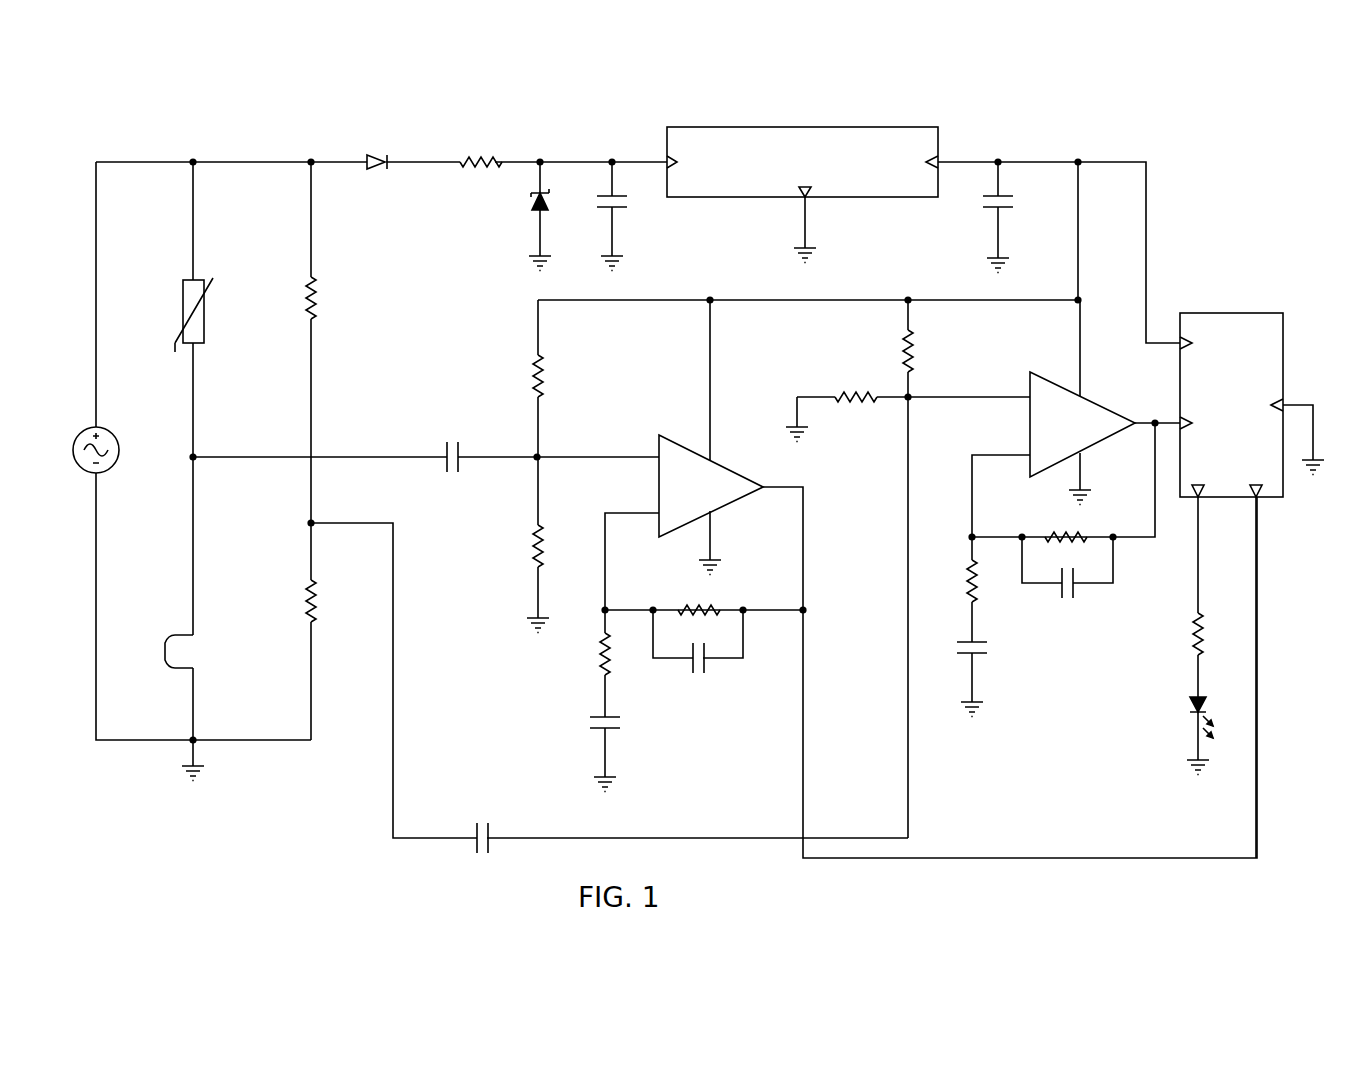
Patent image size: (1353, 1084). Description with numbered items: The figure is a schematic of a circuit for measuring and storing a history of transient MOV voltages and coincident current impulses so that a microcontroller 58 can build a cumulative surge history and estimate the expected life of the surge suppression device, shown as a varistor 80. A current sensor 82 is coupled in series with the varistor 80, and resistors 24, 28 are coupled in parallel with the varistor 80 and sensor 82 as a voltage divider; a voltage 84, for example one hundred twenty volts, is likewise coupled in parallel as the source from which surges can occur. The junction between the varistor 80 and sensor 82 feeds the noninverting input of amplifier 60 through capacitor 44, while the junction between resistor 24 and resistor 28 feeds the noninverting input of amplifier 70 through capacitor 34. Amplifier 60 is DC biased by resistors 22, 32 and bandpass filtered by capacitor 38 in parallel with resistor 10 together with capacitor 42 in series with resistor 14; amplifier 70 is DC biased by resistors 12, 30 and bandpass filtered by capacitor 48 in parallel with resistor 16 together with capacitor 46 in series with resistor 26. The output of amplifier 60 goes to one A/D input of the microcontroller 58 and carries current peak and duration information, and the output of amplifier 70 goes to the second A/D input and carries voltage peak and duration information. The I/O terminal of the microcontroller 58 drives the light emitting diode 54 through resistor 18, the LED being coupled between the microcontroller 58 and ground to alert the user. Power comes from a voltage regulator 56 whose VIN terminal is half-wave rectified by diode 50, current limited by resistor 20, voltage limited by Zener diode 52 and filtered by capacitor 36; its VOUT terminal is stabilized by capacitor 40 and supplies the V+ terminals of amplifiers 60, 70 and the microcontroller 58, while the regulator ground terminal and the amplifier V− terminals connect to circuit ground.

The resistor 10 is at (682, 606).
The resistor 12 is at (847, 393).
The resistor 14 is at (599, 663).
The resistor 16 is at (1052, 528).
The resistor 18 is at (1190, 641).
The resistor 20 is at (479, 155).
The resistor 22 is at (545, 546).
The resistor 24 is at (318, 298).
The resistor 26 is at (964, 586).
The resistor 28 is at (318, 601).
The resistor 30 is at (920, 348).
The resistor 32 is at (545, 373).
The capacitor 34 is at (488, 828).
The capacitor 36 is at (598, 206).
The capacitor 38 is at (694, 669).
The capacitor 40 is at (983, 204).
The capacitor 42 is at (590, 728).
The capacitor 44 is at (459, 442).
The capacitor 46 is at (957, 653).
The capacitor 48 is at (1063, 598).
The diode 50 is at (371, 155).
The Zener diode 52 is at (530, 204).
The light emitting diode 54 is at (1190, 710).
The voltage regulator 56 is at (806, 126).
The microcontroller 58 is at (1224, 313).
The amplifier 60 is at (666, 433).
The amplifier 70 is at (1036, 372).
The varistor 80 is at (205, 315).
The current sensor 82 is at (196, 636).
The voltage 84 is at (108, 433).